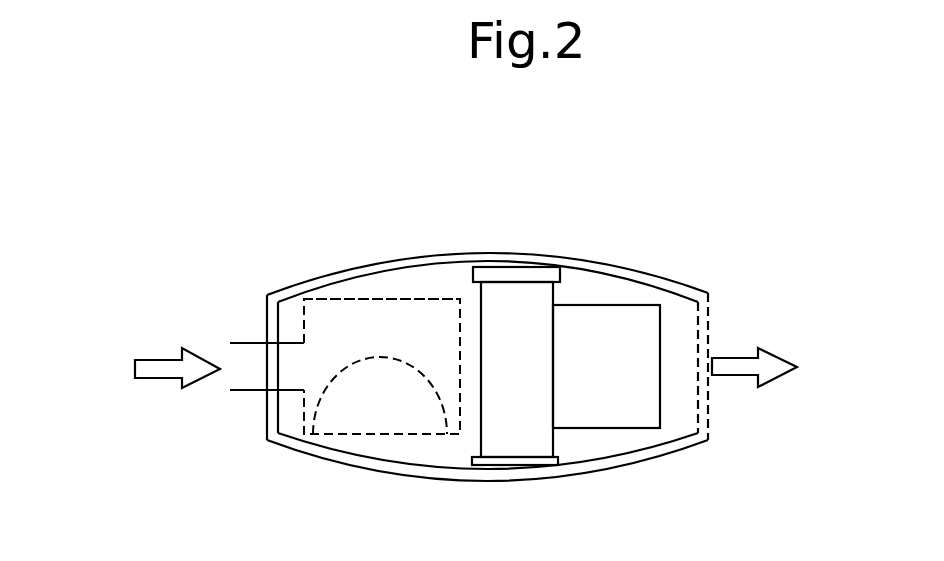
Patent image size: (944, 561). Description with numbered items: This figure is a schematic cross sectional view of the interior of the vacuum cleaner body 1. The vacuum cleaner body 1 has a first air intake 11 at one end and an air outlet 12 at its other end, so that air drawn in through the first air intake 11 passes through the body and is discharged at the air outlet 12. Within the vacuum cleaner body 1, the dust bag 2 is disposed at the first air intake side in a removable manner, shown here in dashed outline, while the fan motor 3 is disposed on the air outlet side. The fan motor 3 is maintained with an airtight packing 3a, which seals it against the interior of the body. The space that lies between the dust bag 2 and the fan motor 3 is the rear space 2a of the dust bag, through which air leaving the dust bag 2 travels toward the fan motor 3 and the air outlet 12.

The vacuum cleaner body 1 is at (607, 265).
The dust bag 2 is at (302, 408).
The rear space of the dust bag 2a is at (422, 280).
The fan motor 3 is at (607, 388).
The airtight packing 3a is at (515, 462).
The first air intake 11 is at (237, 382).
The air outlet 12 is at (701, 391).